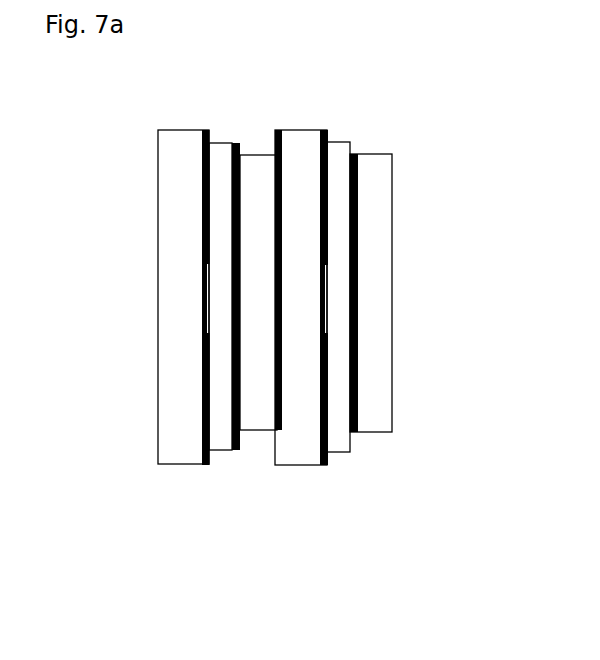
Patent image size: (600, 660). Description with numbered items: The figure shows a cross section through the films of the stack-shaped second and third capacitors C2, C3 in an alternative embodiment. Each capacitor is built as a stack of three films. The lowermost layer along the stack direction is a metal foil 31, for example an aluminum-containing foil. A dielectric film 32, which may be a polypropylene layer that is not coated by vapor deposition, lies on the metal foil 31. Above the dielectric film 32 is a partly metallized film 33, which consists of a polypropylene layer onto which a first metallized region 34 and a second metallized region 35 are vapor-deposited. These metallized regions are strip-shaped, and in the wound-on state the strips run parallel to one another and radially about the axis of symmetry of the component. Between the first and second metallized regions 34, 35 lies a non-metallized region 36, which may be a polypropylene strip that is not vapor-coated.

The metal foil 31 is at (250, 410).
The dielectric film 32 is at (222, 443).
The partly metallized film 33 is at (178, 443).
The first metallized region 34 is at (207, 170).
The second metallized region 35 is at (203, 380).
The non-metallized region 36 is at (201, 297).
The second capacitor C2 is at (270, 138).
The third capacitor C3 is at (405, 138).